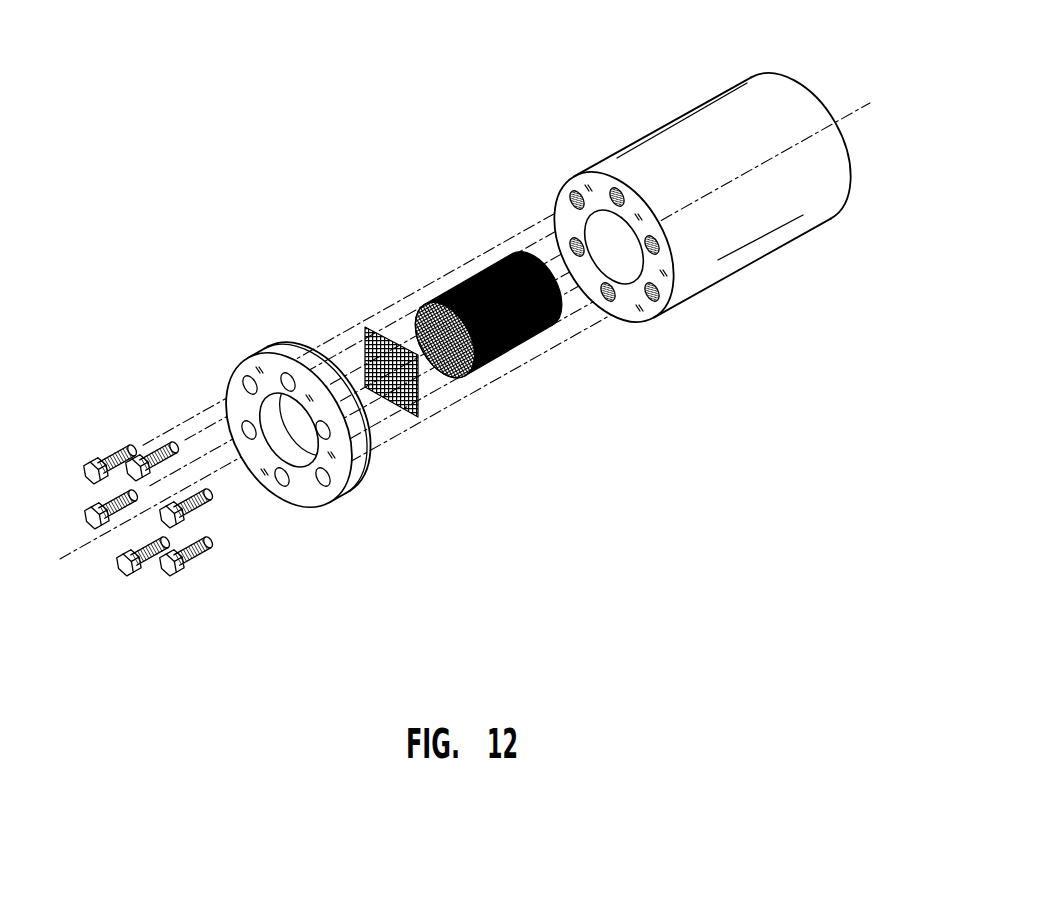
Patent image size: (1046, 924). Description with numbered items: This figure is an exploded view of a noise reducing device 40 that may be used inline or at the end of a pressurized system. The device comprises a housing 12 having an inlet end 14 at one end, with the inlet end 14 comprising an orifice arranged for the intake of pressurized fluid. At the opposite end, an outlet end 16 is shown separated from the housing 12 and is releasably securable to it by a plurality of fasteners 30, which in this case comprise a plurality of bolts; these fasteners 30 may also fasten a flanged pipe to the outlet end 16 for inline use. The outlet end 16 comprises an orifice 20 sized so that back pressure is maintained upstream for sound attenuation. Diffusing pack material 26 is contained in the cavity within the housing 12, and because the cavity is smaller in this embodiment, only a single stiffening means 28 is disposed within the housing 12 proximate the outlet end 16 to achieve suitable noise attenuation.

The noise reducing device 40 is at (307, 155).
The housing 12 is at (783, 280).
The inlet end 14 is at (842, 93).
The outlet end 16 is at (233, 340).
The orifice 20 is at (233, 385).
The diffusing pack material 26 is at (455, 282).
The stiffening means 28 is at (348, 312).
The fasteners 30 is at (82, 452).